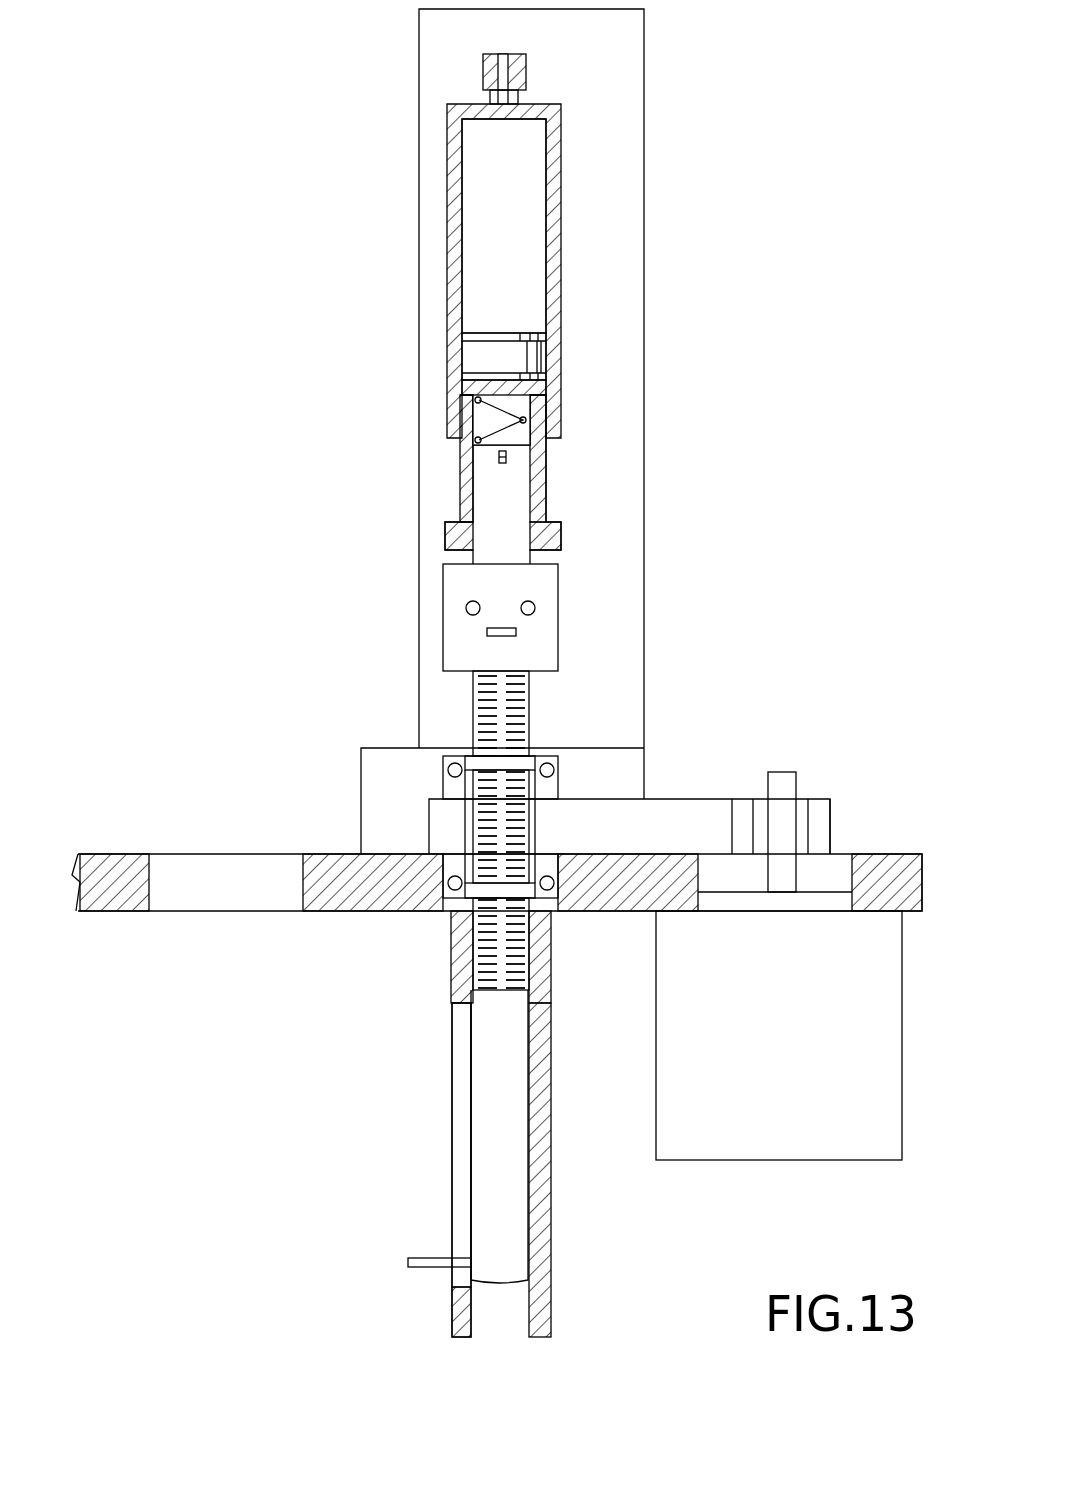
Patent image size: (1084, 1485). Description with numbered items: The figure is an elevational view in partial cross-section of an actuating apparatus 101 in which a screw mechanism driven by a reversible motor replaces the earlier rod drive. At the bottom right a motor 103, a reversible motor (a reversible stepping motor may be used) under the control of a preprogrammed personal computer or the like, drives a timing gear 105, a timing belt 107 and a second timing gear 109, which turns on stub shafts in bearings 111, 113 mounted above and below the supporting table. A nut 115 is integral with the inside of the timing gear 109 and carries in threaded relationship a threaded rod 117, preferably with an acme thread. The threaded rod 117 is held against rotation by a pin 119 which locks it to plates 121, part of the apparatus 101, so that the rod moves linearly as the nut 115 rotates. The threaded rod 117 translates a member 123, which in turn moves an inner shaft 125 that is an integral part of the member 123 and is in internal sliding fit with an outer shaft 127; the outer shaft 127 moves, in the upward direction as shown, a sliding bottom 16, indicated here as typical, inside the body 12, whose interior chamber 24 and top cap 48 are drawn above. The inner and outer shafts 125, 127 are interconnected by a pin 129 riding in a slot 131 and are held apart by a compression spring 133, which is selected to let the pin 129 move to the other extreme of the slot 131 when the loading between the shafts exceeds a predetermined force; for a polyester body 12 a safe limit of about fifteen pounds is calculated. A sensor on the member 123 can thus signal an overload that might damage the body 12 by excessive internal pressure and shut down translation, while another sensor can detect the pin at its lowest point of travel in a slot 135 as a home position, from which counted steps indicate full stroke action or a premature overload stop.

The actuating apparatus 101 is at (693, 130).
The cap 48 is at (483, 62).
The body 12 is at (563, 222).
The cylinder chamber 24 is at (478, 232).
The sliding bottom 16 is at (480, 357).
The outer shaft 127 is at (535, 389).
The inner shaft 125 is at (505, 512).
The compression spring 133 is at (470, 420).
The slot 131 is at (470, 447).
The pin 129 is at (498, 458).
The member 123 is at (540, 625).
The bearing 111 is at (455, 748).
The timing belt 107 is at (677, 812).
The timing gear 105 is at (823, 815).
The timing gear 109 is at (443, 818).
The nut 115 is at (468, 835).
The motor 103 is at (800, 1147).
The bearing 113 is at (507, 900).
The threaded rod 117 is at (498, 1077).
The plates 121 is at (458, 1298).
The slot 135 is at (460, 1173).
The pin 119 is at (430, 1258).